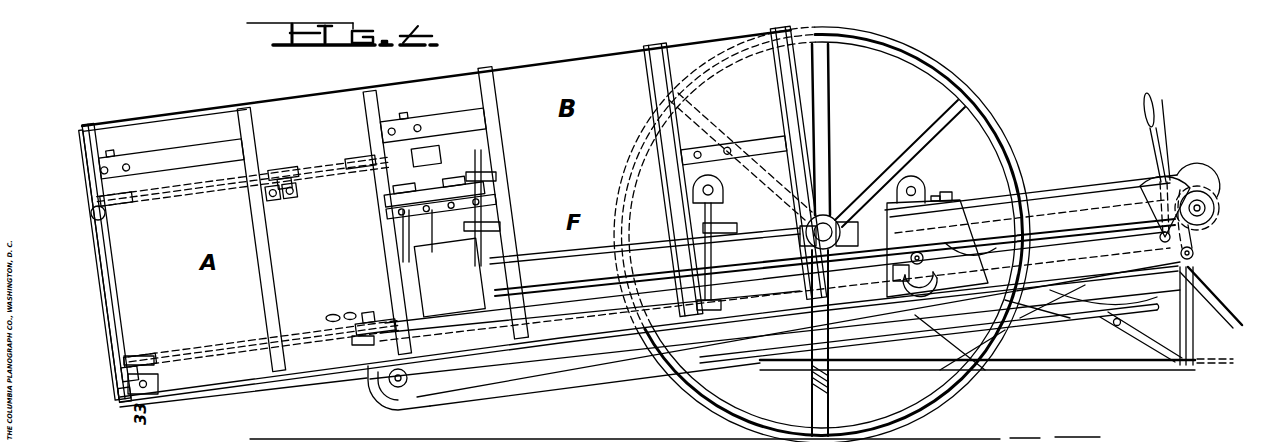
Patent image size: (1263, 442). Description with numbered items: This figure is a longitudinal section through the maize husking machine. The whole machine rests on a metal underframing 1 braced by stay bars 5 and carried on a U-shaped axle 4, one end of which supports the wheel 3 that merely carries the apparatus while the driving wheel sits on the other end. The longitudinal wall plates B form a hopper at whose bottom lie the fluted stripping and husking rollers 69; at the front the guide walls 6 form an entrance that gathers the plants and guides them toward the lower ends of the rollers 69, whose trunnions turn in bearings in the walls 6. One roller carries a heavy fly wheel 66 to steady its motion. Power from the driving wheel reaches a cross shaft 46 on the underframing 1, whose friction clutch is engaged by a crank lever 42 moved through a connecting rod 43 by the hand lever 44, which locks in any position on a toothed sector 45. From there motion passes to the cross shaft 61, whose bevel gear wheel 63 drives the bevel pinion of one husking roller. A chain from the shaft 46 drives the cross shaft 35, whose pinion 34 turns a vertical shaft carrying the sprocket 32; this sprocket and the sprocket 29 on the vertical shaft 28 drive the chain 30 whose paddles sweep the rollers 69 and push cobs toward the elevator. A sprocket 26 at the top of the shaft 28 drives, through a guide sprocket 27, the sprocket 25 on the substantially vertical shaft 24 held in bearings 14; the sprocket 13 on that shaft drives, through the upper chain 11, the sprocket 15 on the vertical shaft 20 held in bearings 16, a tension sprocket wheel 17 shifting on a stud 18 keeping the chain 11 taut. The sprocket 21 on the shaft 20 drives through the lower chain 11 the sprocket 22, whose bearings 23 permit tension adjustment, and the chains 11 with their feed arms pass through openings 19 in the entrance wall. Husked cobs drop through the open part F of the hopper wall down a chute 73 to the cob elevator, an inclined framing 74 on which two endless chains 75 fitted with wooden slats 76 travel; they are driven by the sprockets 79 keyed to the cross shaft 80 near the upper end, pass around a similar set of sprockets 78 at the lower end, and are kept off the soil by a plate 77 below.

The underframing 1 is at (242, 392).
The wheel 3 is at (990, 126).
The U-shaped axle 4 is at (810, 380).
The stay bars 5 is at (1120, 329).
The guide walls 6 is at (211, 107).
The chains 11 is at (220, 349).
The sprocket 13 is at (362, 161).
The bearings 14 is at (443, 123).
The sprocket 15 is at (130, 203).
The bearings 16 is at (178, 159).
The sprocket wheel 17 is at (282, 170).
The stud 18 is at (298, 206).
The openings 19 is at (432, 155).
The vertical shaft 20 is at (132, 293).
The sprocket 21 is at (150, 358).
The sprocket 22 is at (360, 322).
The bearings 23 is at (333, 315).
The substantially vertical shaft 24 is at (380, 198).
The sprocket 25 is at (392, 216).
The sprocket 26 is at (484, 177).
The guide sprocket 27 is at (470, 230).
The vertical shaft 28 is at (482, 227).
The sprocket 29 is at (462, 266).
The chain 30 is at (560, 270).
The sprocket 32 is at (741, 237).
The pinion 34 is at (708, 182).
The cross shaft 35 is at (722, 162).
The crank lever 42 is at (948, 194).
The connecting rod 43 is at (1040, 191).
The hand lever 44 is at (1152, 143).
The toothed sector 45 is at (1150, 231).
The cross shaft 46 is at (918, 186).
The cross shaft 61 is at (912, 290).
The bevel gear wheel 63 is at (1051, 274).
The fly wheel 66 is at (848, 222).
The husking rollers 69 is at (547, 298).
The chute 73 is at (478, 395).
The framing 74 is at (650, 369).
The endless chains 75 is at (430, 400).
The slats 76 is at (1219, 200).
The plate 77 is at (590, 379).
The sprockets 78 is at (376, 397).
The sprockets 79 is at (1216, 222).
The cross shaft 80 is at (1210, 186).